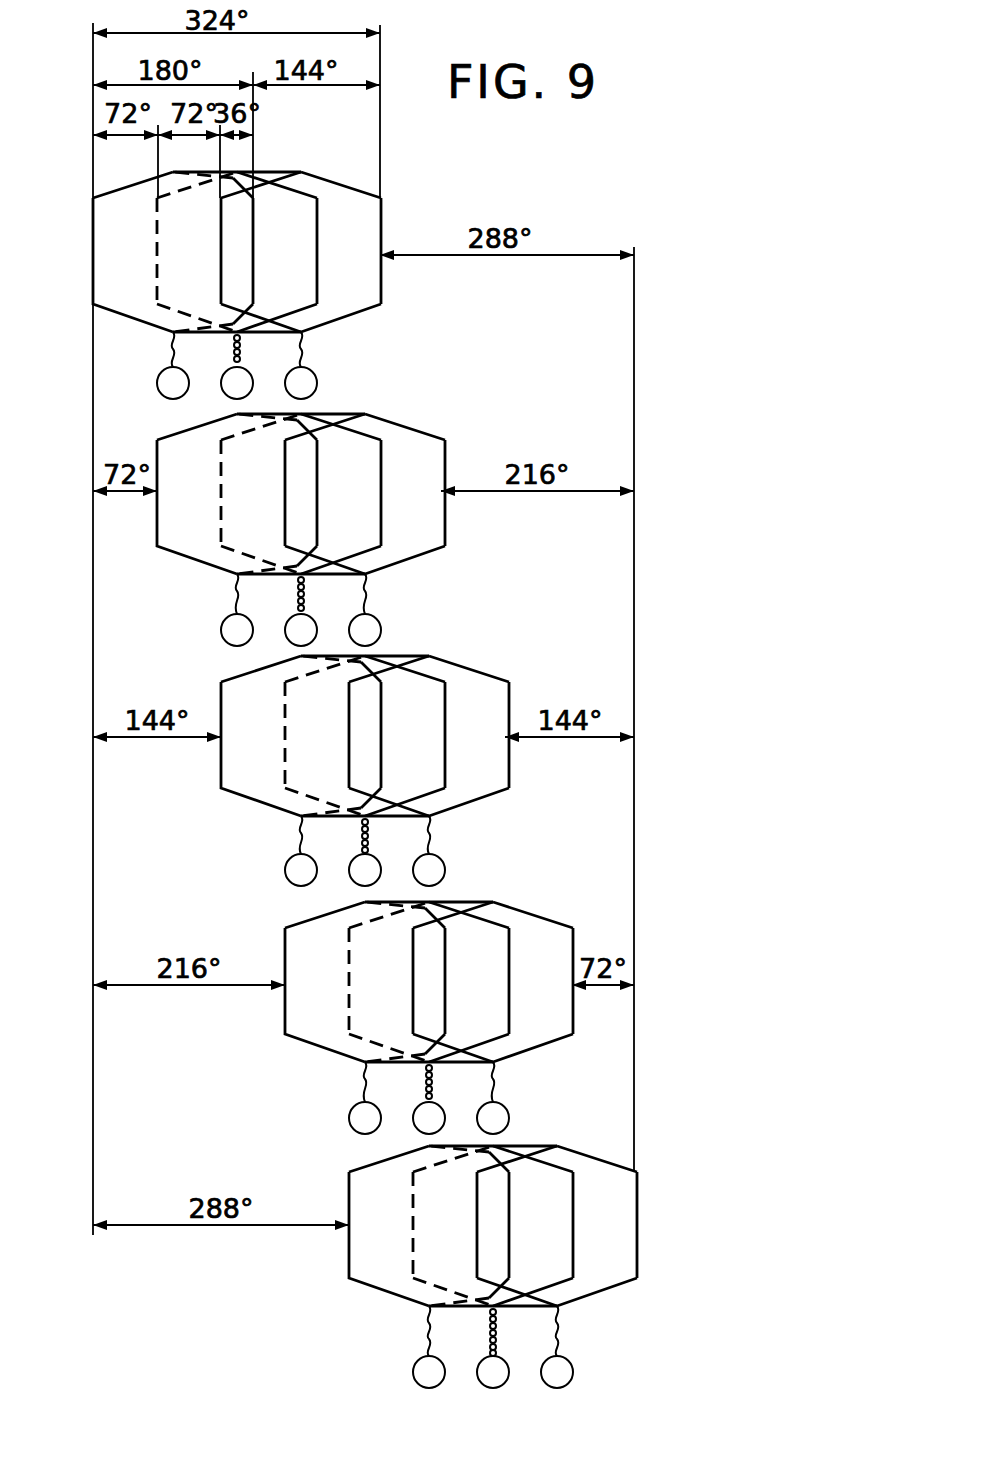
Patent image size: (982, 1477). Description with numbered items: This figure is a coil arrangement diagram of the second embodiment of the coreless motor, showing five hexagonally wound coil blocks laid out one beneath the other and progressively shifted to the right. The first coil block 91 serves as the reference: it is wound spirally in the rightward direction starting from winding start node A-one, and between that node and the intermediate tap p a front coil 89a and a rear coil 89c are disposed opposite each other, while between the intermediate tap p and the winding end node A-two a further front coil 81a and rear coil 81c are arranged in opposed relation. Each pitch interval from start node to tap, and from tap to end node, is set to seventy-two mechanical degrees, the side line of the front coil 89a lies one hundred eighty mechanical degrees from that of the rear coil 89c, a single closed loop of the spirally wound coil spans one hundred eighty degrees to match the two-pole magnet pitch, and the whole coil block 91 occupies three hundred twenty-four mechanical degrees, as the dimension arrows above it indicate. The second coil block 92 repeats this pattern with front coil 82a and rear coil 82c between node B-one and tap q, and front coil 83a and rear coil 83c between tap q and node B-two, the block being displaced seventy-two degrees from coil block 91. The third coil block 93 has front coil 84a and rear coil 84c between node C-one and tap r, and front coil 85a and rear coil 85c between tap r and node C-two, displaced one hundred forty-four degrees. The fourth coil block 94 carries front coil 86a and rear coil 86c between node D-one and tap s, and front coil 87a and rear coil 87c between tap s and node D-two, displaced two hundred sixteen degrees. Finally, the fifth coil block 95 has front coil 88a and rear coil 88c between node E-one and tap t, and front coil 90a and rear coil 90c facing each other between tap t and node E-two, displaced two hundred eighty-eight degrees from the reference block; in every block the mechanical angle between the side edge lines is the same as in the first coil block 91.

The first coil block 91 is at (209, 285).
The second coil block 92 is at (278, 530).
The third coil block 93 is at (341, 771).
The fourth coil block 94 is at (406, 1018).
The fifth coil block 95 is at (464, 1267).
The front coil 89a is at (133, 270).
The rear coil 89c is at (213, 270).
The front coil 81a is at (261, 270).
The rear coil 81c is at (341, 270).
The front coil 82a is at (197, 515).
The rear coil 82c is at (277, 515).
The front coil 83a is at (325, 515).
The rear coil 83c is at (405, 515).
The front coil 84a is at (261, 757).
The rear coil 84c is at (341, 757).
The front coil 85a is at (389, 757).
The rear coil 85c is at (469, 757).
The front coil 86a is at (325, 1004).
The rear coil 86c is at (405, 1004).
The front coil 87a is at (453, 1004).
The rear coil 87c is at (533, 1004).
The front coil 88a is at (389, 1250).
The rear coil 88c is at (469, 1250).
The front coil 90a is at (517, 1250).
The rear coil 90c is at (597, 1250).